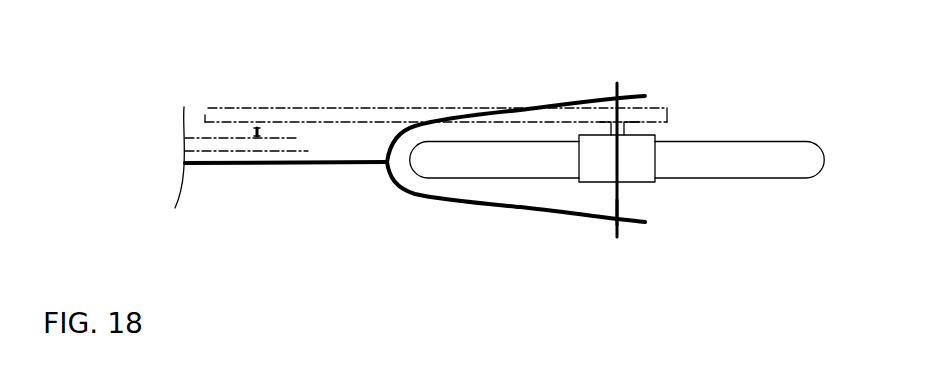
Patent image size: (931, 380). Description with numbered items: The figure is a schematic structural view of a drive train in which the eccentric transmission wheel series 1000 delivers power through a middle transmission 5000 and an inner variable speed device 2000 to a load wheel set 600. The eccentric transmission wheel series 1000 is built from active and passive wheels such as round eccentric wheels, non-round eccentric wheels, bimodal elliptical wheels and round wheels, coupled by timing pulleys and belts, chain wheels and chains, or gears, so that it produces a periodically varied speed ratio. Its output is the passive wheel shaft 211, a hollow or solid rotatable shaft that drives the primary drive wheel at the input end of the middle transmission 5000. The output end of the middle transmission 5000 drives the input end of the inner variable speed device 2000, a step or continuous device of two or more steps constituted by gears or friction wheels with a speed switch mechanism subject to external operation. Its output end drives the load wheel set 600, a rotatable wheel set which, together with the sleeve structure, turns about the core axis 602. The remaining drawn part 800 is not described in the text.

The passive wheel shaft 211 is at (263, 131).
The middle transmission 5000 is at (333, 110).
The eccentric transmission wheel series 1000 is at (308, 140).
The forked frame 800 is at (513, 212).
The load wheel set 600 is at (752, 158).
The inner variable speed device 2000 is at (655, 159).
The core axis 602 is at (622, 203).